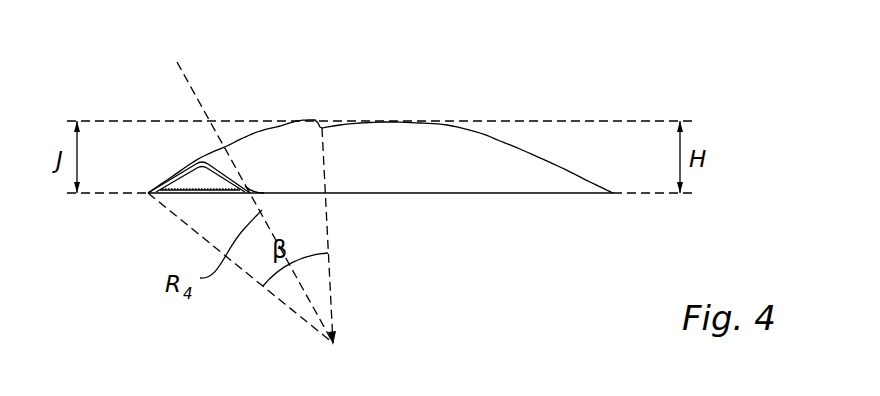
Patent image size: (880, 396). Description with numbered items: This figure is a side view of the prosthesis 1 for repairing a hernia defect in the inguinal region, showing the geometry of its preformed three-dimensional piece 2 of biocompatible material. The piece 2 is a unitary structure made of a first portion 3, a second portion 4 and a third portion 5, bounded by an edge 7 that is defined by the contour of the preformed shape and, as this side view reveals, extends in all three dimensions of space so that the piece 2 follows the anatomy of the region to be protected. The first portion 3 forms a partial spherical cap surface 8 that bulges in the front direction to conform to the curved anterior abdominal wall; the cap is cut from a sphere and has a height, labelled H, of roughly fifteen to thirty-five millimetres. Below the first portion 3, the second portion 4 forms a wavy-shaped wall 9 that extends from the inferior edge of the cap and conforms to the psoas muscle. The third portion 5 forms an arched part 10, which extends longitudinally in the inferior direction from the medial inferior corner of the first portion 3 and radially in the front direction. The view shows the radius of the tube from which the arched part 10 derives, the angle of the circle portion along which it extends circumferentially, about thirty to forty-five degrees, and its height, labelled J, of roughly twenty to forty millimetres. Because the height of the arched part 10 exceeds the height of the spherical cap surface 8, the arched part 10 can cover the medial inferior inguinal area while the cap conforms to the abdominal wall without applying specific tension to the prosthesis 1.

The prosthesis 1 is at (624, 97).
The piece 2 is at (580, 161).
The first portion 3 is at (450, 118).
The second portion 4 is at (402, 180).
The third portion 5 is at (274, 118).
The edge 7 is at (154, 172).
The partial spherical cap surface 8 is at (378, 123).
The wavy-shaped wall 9 is at (490, 173).
The arched part 10 is at (243, 137).